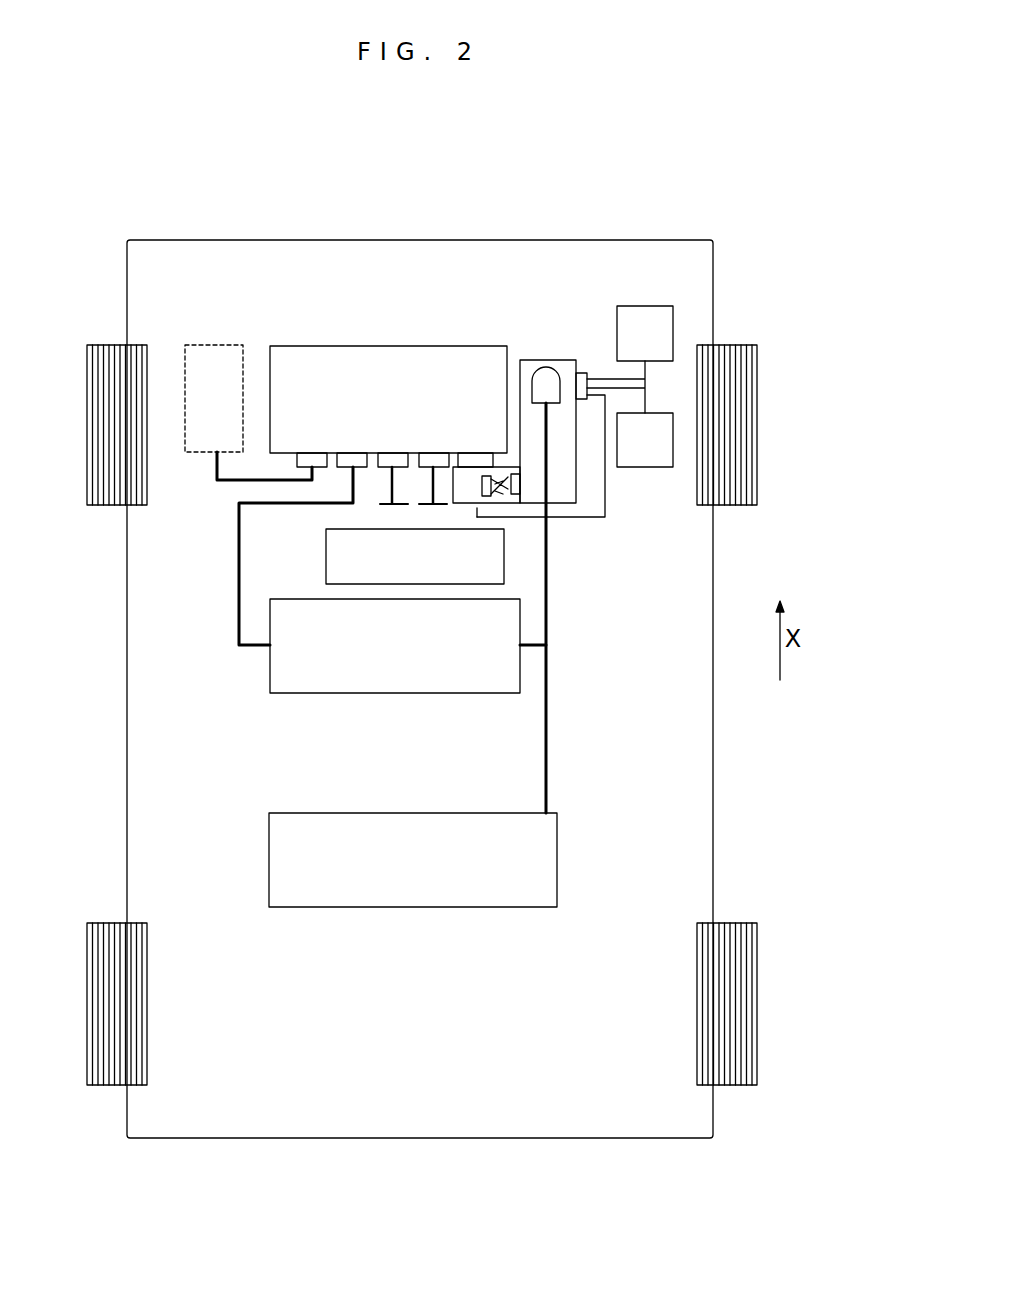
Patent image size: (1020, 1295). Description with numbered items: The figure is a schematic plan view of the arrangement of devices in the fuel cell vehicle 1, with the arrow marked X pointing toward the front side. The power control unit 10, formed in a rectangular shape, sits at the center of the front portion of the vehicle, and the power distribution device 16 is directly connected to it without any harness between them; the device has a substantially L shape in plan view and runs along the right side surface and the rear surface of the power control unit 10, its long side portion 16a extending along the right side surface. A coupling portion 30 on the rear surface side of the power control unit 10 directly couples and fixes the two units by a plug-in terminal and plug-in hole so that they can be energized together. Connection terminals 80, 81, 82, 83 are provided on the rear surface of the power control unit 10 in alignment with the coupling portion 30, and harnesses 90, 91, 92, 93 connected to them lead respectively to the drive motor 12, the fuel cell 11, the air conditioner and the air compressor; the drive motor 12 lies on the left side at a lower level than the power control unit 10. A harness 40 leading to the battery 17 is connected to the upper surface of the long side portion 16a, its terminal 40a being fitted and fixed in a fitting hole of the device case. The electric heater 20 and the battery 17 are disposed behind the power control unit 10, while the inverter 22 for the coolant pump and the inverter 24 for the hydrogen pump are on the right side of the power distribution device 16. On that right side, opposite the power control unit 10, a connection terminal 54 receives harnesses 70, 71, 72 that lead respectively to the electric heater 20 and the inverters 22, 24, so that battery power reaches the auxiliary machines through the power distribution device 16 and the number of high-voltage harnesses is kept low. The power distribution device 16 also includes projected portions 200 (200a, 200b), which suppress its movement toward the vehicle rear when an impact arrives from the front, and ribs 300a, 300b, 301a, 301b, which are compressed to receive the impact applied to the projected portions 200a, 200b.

The fuel cell vehicle 1 is at (443, 208).
The power control unit 10 is at (353, 345).
The fuel cell 11 is at (520, 672).
The drive motor 12 is at (220, 343).
The power distribution device 16 is at (531, 360).
The long side portion 16a is at (519, 360).
The battery 17 is at (557, 857).
The electric heater 20 is at (505, 560).
The inverter for fuel cell pump 22 is at (642, 306).
The inverter for hydrogen pump 24 is at (645, 468).
The coupling portion 30 is at (480, 452).
The harness 40 is at (548, 605).
The terminal 40a is at (562, 360).
The connection terminal 54 is at (583, 373).
The harness 70 is at (606, 517).
The harness 71 is at (646, 378).
The harness 72 is at (647, 403).
The connection terminal 80 is at (312, 452).
The connection terminal 81 is at (357, 452).
The connection terminal 82 is at (397, 452).
The connection terminal 83 is at (438, 452).
The harness 90 is at (215, 470).
The harness 91 is at (238, 606).
The harness 92 is at (390, 485).
The harness 93 is at (431, 485).
The projected portion 200 is at (565, 603).
The projected portion 200a is at (595, 513).
The projected portion 200b is at (477, 517).
The rib 300a is at (513, 480).
The rib 300b is at (516, 490).
The rib 301a is at (507, 476).
The rib 301b is at (483, 523).